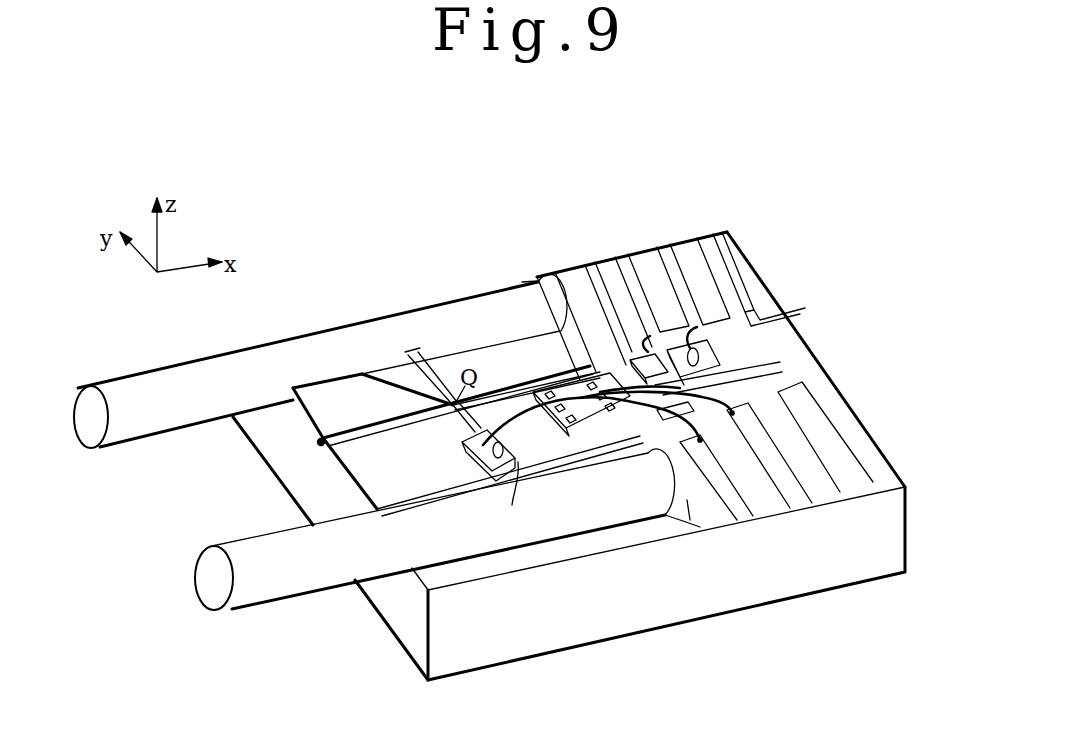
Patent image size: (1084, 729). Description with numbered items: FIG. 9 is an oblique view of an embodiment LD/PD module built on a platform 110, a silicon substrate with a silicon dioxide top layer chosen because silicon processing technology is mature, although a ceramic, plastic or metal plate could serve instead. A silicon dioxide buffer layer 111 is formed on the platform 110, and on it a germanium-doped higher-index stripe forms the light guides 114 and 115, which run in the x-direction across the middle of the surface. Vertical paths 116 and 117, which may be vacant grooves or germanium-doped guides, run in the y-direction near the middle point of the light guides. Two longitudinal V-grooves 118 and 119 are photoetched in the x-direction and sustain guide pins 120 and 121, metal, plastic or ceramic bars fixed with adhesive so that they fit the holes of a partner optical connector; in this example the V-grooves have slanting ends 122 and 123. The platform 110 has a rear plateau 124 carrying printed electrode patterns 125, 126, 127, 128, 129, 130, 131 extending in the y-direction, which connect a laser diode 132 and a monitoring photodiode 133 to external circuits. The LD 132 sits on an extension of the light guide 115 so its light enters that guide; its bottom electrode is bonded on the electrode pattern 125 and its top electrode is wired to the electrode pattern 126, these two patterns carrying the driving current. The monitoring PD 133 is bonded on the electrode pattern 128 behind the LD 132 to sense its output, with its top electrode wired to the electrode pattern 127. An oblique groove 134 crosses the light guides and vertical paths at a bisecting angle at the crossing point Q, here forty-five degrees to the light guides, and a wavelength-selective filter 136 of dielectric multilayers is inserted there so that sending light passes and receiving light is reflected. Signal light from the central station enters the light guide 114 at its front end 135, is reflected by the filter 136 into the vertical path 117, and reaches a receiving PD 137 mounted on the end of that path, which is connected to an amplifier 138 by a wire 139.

The platform 110 is at (548, 606).
The SiO2 buffer layer 111 is at (343, 467).
The light guide 114 is at (391, 417).
The light guide 115 is at (510, 375).
The vertical path 116 is at (420, 350).
The vertical path 117 is at (473, 414).
The V-groove 118 is at (290, 412).
The V-groove 119 is at (412, 568).
The guide pin 120 is at (190, 390).
The guide pin 121 is at (300, 553).
The slanting end 122 is at (522, 282).
The slanting end 123 is at (687, 500).
The rear plateau 124 is at (750, 297).
The electrode pattern 125 is at (577, 283).
The electrode pattern 126 is at (610, 283).
The electrode pattern 127 is at (652, 273).
The electrode pattern 128 is at (697, 265).
The electrode pattern 129 is at (860, 434).
The electrode pattern 130 is at (788, 480).
The electrode pattern 131 is at (740, 497).
The laser diode (LD) 132 is at (720, 383).
The monitoring photodiode (PD) 133 is at (713, 357).
The oblique groove 134 is at (400, 345).
The front end 135 is at (321, 442).
The filter 136 is at (448, 400).
The PD 137 is at (484, 464).
The amplifier 138 is at (536, 399).
The wire 139 is at (526, 408).